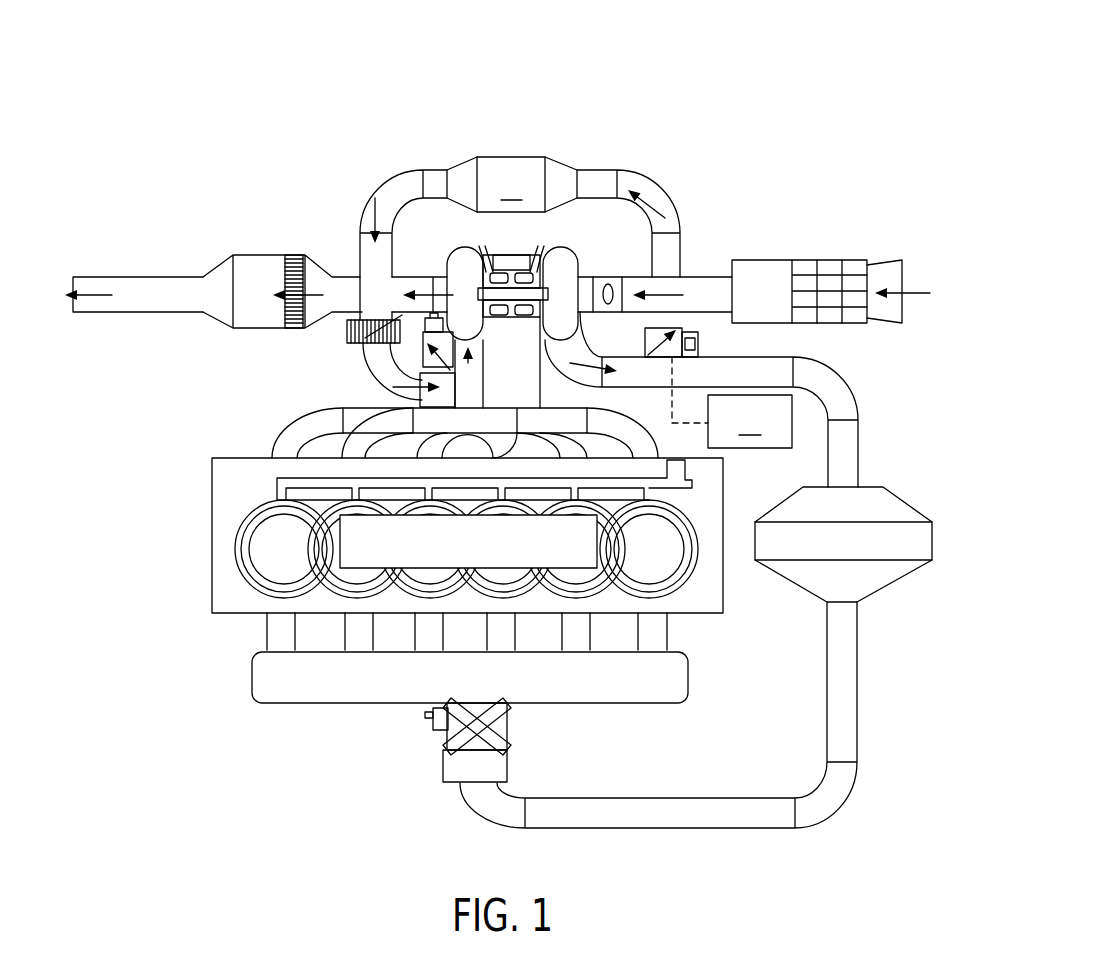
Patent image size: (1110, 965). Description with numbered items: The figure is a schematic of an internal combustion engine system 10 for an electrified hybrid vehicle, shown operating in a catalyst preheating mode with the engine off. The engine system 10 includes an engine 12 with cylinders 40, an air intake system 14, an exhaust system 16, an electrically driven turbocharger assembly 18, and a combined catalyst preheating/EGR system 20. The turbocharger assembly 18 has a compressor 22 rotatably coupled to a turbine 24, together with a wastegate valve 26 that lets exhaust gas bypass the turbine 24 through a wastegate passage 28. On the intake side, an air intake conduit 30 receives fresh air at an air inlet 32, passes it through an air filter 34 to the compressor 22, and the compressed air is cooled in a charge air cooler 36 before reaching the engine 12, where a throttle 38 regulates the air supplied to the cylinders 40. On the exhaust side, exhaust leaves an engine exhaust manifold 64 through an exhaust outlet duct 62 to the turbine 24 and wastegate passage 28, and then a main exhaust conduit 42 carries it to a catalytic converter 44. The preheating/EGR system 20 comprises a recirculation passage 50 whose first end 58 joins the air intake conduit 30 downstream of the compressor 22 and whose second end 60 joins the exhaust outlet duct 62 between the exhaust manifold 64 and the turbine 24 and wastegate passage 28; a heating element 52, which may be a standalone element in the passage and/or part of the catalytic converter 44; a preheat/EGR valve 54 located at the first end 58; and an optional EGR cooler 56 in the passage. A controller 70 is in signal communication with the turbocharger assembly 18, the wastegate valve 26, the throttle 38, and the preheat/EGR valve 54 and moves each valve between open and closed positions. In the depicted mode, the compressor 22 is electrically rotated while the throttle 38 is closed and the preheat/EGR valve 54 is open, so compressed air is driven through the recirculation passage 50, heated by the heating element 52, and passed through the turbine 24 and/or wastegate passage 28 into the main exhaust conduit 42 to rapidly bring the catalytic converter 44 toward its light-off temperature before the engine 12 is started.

The internal combustion engine system 10 is at (843, 86).
The engine 12 is at (445, 560).
The air intake system 14 is at (878, 682).
The exhaust system 16 is at (145, 208).
The turbocharger assembly 18 is at (525, 322).
The combined catalyst preheating/EGR system 20 is at (520, 128).
The compressor 22 is at (567, 273).
The turbine 24 is at (463, 255).
The wastegate valve 26 is at (383, 377).
The wastegate passage 28 is at (397, 318).
The air intake conduit 30 is at (702, 287).
The air inlet 32 is at (887, 268).
The air filter 34 is at (843, 270).
The charge air cooler 36 is at (915, 537).
The throttle 38 is at (508, 725).
The cylinders 40 is at (235, 583).
The main exhaust conduit 42 is at (193, 283).
The catalytic converter 44 is at (255, 262).
The recirculation passage 50 is at (402, 187).
The heating element 52 is at (295, 260).
The preheat/EGR valve 54 is at (700, 340).
The EGR cooler 56 is at (512, 184).
The first end 58 is at (642, 318).
The second end 60 is at (363, 396).
The exhaust outlet duct 62 is at (478, 382).
The engine exhaust manifold 64 is at (245, 448).
The controller 70 is at (750, 421).